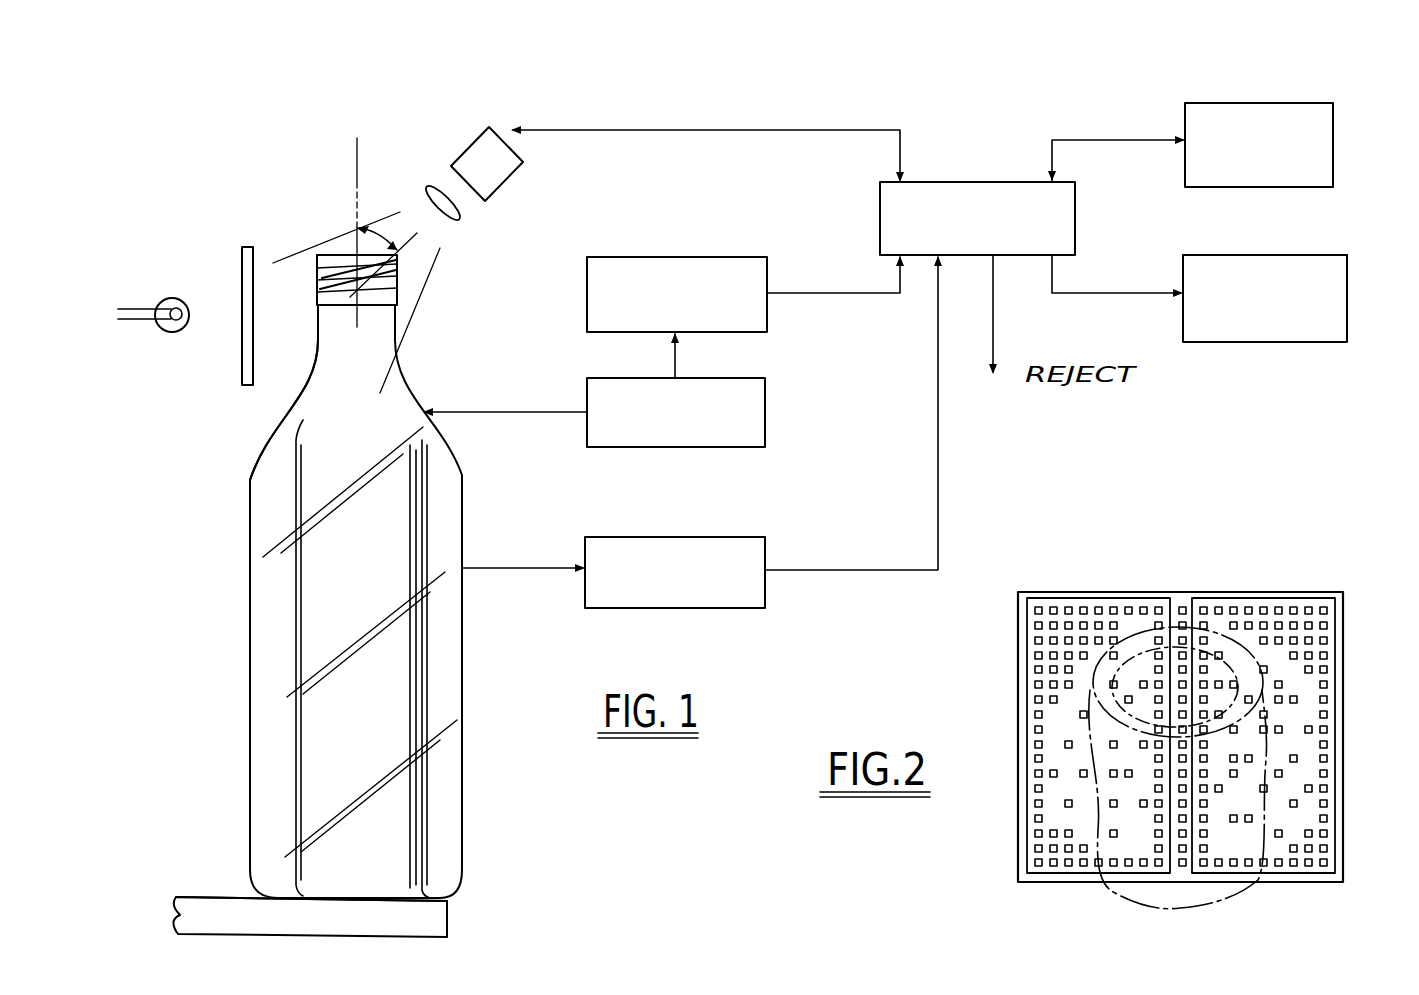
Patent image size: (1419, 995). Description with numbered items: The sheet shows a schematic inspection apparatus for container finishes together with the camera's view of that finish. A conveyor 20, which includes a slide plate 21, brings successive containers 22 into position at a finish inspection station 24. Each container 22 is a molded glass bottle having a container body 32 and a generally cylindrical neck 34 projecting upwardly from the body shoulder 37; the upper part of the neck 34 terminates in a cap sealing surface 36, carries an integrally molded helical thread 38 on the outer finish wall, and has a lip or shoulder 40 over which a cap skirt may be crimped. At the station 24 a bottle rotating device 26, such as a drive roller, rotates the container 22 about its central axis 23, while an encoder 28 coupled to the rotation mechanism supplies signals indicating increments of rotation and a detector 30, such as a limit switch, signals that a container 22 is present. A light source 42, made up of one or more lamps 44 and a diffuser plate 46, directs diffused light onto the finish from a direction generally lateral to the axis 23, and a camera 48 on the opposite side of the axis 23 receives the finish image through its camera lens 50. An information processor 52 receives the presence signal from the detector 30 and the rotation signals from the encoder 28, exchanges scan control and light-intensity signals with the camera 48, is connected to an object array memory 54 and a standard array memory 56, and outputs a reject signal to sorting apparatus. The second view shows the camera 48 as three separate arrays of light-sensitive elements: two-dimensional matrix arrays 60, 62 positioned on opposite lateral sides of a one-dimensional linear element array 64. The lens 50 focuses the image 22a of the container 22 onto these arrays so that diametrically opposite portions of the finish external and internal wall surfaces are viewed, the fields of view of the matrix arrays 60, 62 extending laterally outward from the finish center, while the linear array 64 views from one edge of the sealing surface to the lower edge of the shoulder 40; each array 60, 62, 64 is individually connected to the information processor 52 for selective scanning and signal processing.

In FIG. 1, the conveyor 20 is at (452, 911).
In FIG. 1, the slide plate 21 is at (222, 866).
In FIG. 1, the container 22 is at (462, 825).
In FIG. 2, the image of container 22a is at (1276, 755).
In FIG. 1, the central axis 23 is at (355, 164).
In FIG. 1, the finish inspection station 24 is at (522, 162).
In FIG. 1, the bottle rotating device 26 is at (767, 403).
In FIG. 1, the encoder 28 is at (705, 258).
In FIG. 1, the detector 30 is at (717, 537).
In FIG. 1, the container body 32 is at (453, 692).
In FIG. 1, the neck 34 is at (321, 342).
In FIG. 1, the cap sealing surface 36 is at (316, 258).
In FIG. 1, the body shoulder 37 is at (260, 442).
In FIG. 1, the helical thread 38 is at (397, 278).
In FIG. 1, the lip or shoulder 40 is at (387, 301).
In FIG. 1, the light source 42 is at (173, 301).
In FIG. 1, the lamp 44 is at (185, 308).
In FIG. 1, the diffuser plate 46 is at (238, 289).
In FIG. 1, the camera 48 is at (500, 128).
In FIG. 2, the camera 48 is at (1217, 707).
In FIG. 1, the camera lens 50 is at (430, 188).
In FIG. 1, the information processor 52 is at (977, 181).
In FIG. 1, the object array memory 54 is at (1335, 150).
In FIG. 1, the standard array memory 56 is at (1313, 255).
In FIG. 2, the matrix array 60 is at (1068, 598).
In FIG. 2, the matrix array 62 is at (1257, 598).
In FIG. 2, the linear element array 64 is at (1182, 597).